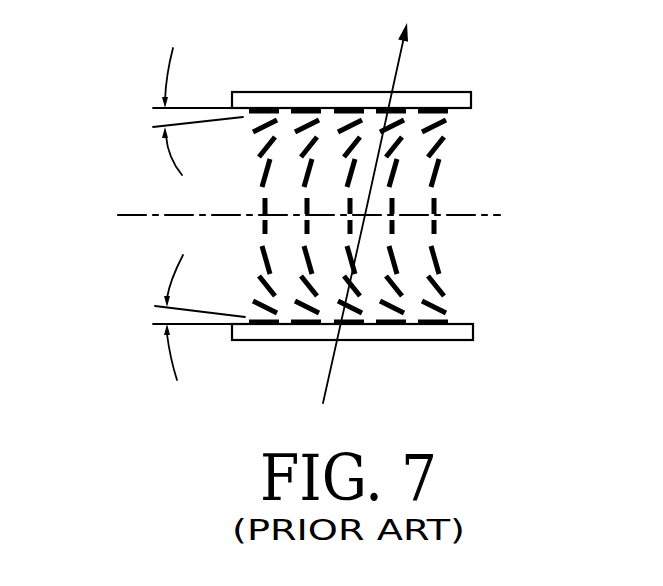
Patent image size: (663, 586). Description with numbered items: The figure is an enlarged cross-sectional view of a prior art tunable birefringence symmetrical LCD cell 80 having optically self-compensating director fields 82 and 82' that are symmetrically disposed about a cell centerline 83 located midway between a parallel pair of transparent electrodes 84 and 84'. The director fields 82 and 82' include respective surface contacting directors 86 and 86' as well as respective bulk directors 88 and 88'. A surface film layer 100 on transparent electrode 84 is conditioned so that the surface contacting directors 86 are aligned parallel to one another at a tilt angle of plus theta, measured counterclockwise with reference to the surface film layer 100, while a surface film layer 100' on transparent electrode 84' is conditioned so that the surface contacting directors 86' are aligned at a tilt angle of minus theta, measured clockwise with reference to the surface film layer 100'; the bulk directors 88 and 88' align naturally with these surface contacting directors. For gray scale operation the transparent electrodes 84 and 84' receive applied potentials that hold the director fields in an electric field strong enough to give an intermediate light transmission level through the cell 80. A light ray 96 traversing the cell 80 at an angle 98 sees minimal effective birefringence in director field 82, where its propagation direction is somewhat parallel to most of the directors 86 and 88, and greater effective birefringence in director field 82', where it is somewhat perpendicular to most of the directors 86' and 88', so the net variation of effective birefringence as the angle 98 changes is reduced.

The symmetrical LCD cell 80 is at (211, 354).
The director field 82 is at (417, 162).
The director field 82' is at (418, 286).
The cell centerline 83 is at (186, 213).
The transparent electrode 84 is at (404, 97).
The transparent electrode 84' is at (377, 372).
The surface contacting directors 86 is at (383, 90).
The surface contacting directors 86' is at (407, 364).
The bulk directors 88 is at (318, 175).
The bulk directors 88' is at (403, 257).
The light ray 96 is at (397, 68).
The angle 98 is at (326, 360).
The surface film layer 100 is at (174, 109).
The surface film layer 100' is at (175, 301).